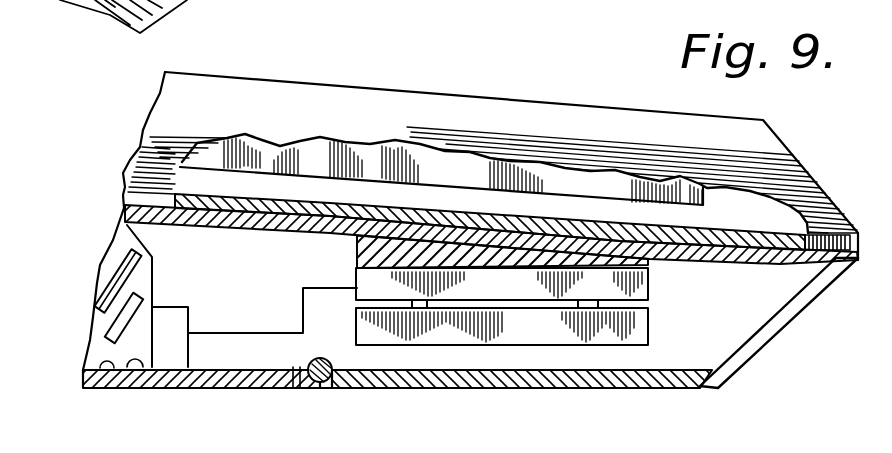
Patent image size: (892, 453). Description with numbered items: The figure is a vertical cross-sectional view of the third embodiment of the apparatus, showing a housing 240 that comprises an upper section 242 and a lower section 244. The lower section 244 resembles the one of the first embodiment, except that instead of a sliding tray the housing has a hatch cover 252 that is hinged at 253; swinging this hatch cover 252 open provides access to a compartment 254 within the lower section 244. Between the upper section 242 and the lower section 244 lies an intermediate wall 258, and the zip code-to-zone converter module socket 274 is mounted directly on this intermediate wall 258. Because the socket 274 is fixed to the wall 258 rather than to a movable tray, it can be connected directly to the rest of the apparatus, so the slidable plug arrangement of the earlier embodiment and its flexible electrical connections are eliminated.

The housing 240 is at (475, 60).
The upper section 242 is at (562, 105).
The lower section 244 is at (770, 322).
The hatch cover 252 is at (568, 389).
The hinge 253 is at (320, 386).
The compartment 254 is at (491, 357).
The intermediate wall 258 is at (407, 207).
The zip code-to-zone converter module socket 274 is at (368, 249).